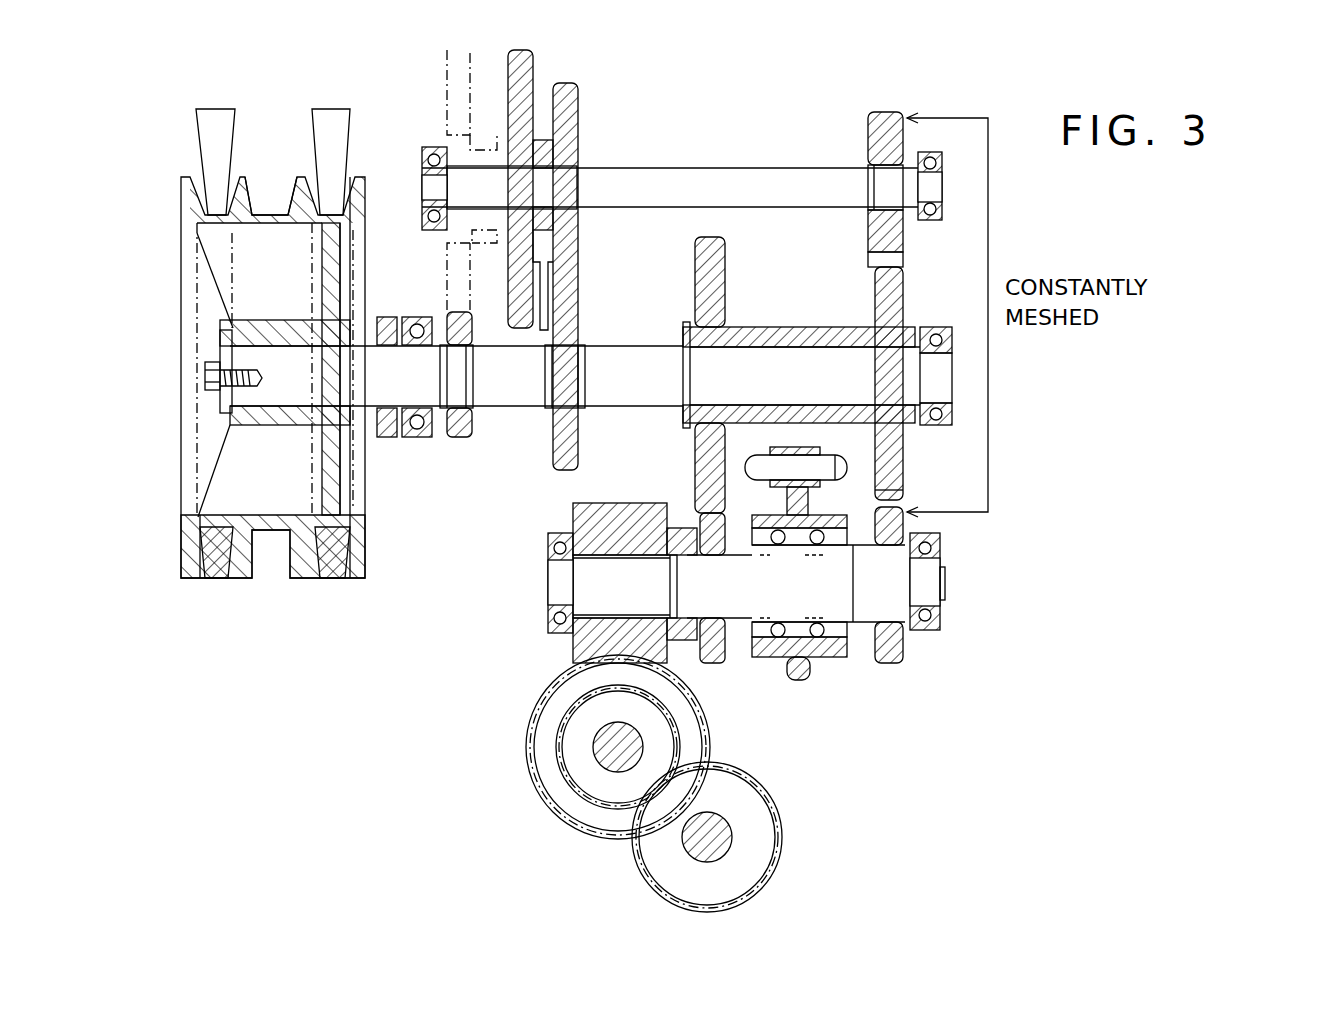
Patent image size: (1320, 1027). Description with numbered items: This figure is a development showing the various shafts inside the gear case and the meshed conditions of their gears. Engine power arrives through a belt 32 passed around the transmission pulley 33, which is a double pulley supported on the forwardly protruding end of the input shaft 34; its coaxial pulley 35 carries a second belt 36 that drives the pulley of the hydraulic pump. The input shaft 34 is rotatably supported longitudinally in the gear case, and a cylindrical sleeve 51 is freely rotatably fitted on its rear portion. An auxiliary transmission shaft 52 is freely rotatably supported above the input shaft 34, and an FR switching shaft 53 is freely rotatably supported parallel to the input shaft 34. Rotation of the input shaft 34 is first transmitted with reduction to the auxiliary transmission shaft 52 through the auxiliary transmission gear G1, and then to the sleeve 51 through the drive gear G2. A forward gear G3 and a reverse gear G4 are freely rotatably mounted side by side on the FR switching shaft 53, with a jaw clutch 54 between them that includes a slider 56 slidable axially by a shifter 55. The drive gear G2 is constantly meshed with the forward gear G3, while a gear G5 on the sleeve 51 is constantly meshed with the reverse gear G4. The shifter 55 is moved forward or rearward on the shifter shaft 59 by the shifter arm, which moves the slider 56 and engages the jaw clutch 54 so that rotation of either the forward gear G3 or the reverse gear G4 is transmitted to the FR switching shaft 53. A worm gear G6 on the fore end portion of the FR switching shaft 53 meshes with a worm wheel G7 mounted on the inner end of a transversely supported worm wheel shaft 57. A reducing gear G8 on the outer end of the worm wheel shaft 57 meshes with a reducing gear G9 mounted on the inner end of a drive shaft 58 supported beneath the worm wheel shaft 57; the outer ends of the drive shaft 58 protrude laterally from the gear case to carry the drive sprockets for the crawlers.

The belt 32 is at (314, 145).
The transmission pulley 33 is at (364, 177).
The input shaft 34 is at (632, 362).
The coaxial pulley 35 is at (258, 180).
The belt 36 is at (197, 142).
The cylindrical sleeve 51 is at (806, 328).
The auxiliary transmission shaft 52 is at (634, 175).
The FR switching shaft 53 is at (895, 578).
The jaw clutch 54 is at (810, 680).
The shifter 55 is at (785, 499).
The slider 56 is at (810, 499).
The worm wheel shaft 57 is at (592, 741).
The drive shaft 58 is at (732, 838).
The shifter shaft 59 is at (805, 456).
The auxiliary transmission gear G1 is at (586, 290).
The drive gear G2 is at (880, 110).
The forward gear G3 is at (900, 665).
The reverse gear G4 is at (716, 666).
The gear on the sleeve G5 is at (727, 262).
The worm gear G6 is at (592, 503).
The worm wheel G7 is at (545, 694).
The reducing gear G8 is at (570, 786).
The reducing gear G9 is at (758, 883).